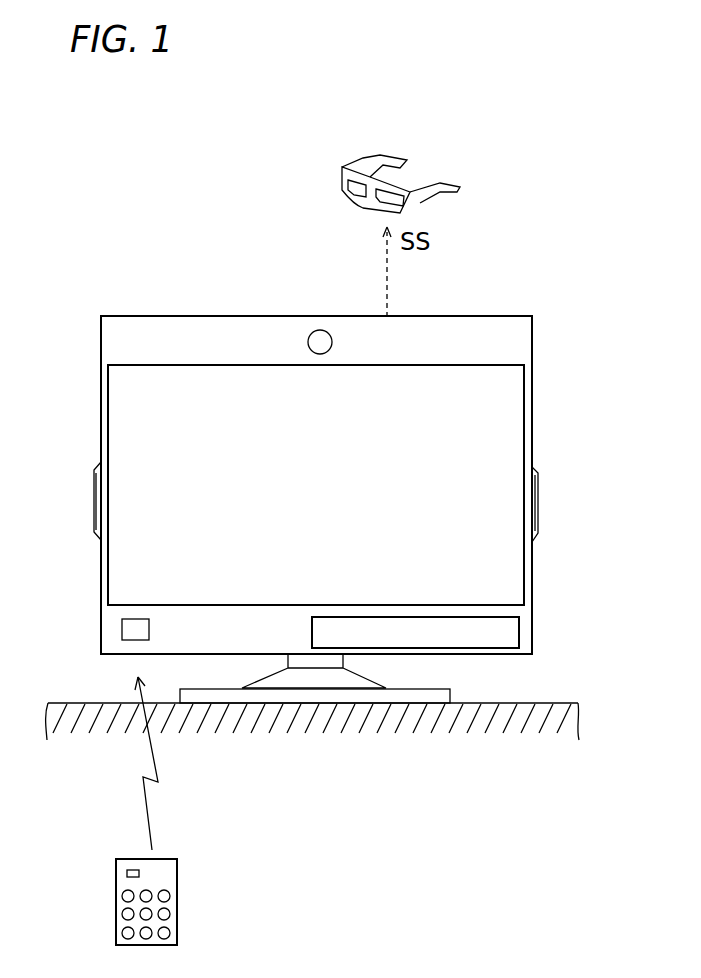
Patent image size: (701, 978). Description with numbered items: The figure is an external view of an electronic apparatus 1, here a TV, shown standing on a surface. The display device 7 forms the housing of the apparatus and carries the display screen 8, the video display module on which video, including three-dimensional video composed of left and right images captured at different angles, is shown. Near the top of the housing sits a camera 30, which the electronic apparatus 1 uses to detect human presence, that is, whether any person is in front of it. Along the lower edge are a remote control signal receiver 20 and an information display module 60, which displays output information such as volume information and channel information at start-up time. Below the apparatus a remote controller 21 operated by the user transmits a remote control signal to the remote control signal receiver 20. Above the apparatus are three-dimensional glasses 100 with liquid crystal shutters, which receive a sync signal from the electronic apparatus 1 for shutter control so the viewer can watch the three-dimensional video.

The electronic apparatus 1 is at (329, 466).
The display device 7 is at (487, 317).
The display screen 8 is at (503, 413).
The remote control signal receiver 20 is at (122, 630).
The remote controller 21 is at (177, 902).
The camera 30 is at (322, 330).
The information display module 60 is at (503, 635).
The 3D glasses 100 is at (360, 157).